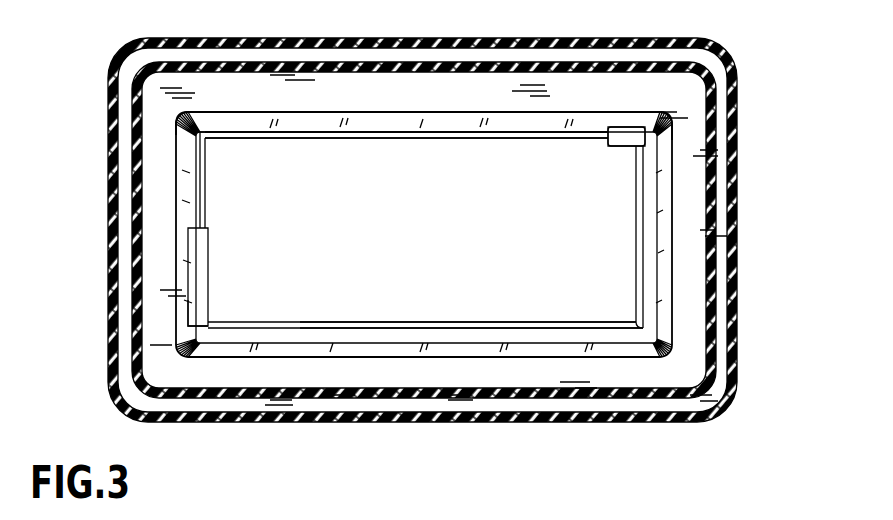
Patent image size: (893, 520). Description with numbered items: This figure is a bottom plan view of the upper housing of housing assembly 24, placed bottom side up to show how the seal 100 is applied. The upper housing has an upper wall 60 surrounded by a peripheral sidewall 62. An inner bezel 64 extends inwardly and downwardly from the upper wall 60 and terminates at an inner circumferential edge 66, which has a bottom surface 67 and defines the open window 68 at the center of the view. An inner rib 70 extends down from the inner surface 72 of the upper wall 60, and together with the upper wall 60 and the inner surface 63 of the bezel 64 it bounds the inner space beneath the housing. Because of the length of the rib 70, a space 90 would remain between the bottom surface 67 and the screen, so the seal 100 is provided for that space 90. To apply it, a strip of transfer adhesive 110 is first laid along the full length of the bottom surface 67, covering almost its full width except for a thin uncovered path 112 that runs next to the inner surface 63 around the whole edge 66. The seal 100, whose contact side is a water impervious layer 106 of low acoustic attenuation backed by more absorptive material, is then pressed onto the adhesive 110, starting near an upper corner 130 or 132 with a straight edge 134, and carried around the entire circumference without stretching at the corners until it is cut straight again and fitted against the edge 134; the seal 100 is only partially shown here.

The housing assembly 24 is at (763, 166).
The upper wall 60 is at (153, 215).
The peripheral sidewall 62 is at (738, 284).
The inner surface of bezel 63 is at (192, 180).
The inner bezel 64 is at (440, 118).
The inner circumferential edge 66 is at (201, 208).
The bottom surface 67 is at (458, 133).
The open window 68 is at (445, 242).
The inner rib 70 is at (693, 228).
The inner surface 72 is at (468, 82).
The space 90 is at (370, 266).
The seal 100 is at (423, 328).
The water impervious layer 106 is at (218, 338).
The transfer adhesive 110 is at (300, 130).
The thin uncovered path 112 is at (540, 133).
The upper corner 130 is at (667, 99).
The upper corner 132 is at (192, 97).
The straight edge 134 is at (603, 140).